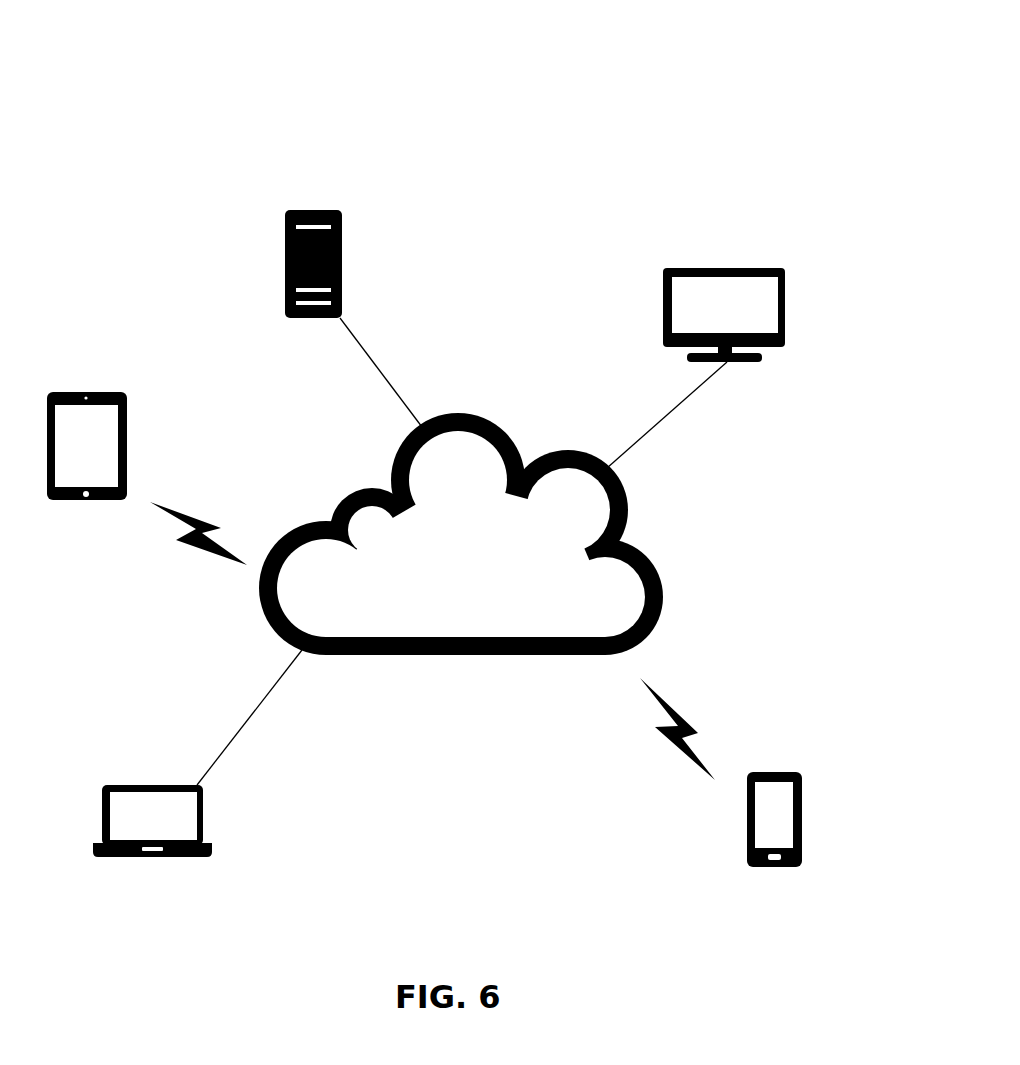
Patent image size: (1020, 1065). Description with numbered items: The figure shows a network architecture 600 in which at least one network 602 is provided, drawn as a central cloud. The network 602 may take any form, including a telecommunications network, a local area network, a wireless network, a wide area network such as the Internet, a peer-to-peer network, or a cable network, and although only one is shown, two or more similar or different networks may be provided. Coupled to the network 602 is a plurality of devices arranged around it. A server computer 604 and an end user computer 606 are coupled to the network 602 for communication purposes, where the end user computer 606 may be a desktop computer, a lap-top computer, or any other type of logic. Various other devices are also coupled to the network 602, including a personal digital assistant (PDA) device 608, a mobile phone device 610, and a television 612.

The network architecture 600 is at (98, 97).
The network 602 is at (472, 656).
The server computer 604 is at (310, 210).
The end user computer 606 is at (147, 786).
The personal digital assistant (PDA) device 608 is at (86, 392).
The mobile phone device 610 is at (765, 772).
The television 612 is at (727, 268).